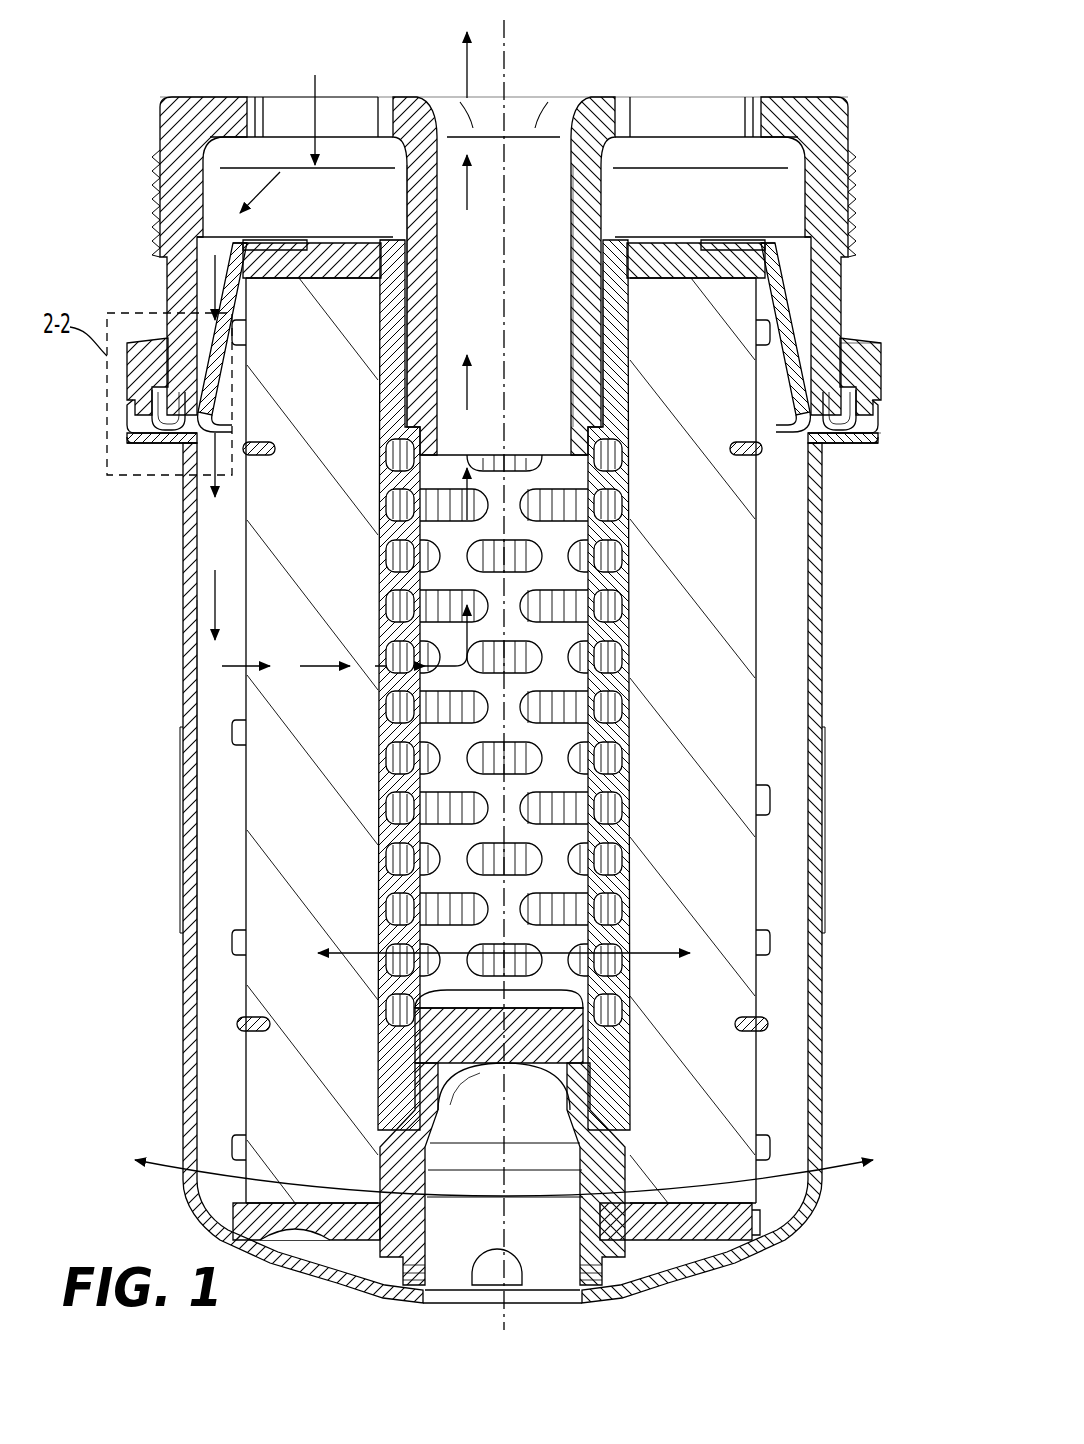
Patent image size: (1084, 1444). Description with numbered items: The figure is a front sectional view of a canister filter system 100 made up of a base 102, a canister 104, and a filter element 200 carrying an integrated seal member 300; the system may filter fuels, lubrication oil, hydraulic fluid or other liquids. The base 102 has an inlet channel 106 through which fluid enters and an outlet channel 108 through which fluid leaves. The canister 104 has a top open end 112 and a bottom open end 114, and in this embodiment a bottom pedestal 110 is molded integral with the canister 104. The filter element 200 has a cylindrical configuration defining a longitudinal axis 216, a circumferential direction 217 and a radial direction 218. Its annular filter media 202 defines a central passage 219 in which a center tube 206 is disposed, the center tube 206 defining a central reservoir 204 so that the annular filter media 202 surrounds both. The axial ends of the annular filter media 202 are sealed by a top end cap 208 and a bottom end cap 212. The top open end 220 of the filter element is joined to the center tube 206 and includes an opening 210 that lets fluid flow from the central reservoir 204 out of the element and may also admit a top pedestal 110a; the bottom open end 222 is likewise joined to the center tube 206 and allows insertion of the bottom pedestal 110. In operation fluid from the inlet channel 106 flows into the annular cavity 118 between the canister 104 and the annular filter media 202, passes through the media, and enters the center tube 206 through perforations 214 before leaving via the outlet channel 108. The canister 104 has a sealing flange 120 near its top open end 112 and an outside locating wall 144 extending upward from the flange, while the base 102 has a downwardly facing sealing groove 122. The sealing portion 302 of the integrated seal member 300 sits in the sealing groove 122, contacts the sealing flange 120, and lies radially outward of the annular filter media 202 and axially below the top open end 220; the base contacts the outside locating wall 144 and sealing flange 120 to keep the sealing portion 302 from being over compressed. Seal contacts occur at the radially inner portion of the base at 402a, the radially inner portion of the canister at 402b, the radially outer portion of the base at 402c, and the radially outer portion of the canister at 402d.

The canister filter system 100 is at (636, 53).
The base 102 is at (812, 86).
The canister 104 is at (822, 668).
The inlet channel 106 is at (352, 104).
The outlet channel 108 is at (527, 108).
The bottom pedestal 110 is at (586, 1058).
The top pedestal 110a is at (582, 402).
The top open end 112 is at (236, 430).
The bottom open end 114 is at (552, 1264).
The annular cavity 118 is at (198, 782).
The sealing flange 120 is at (160, 432).
The sealing groove 122 is at (190, 383).
The outside locating wall 144 is at (128, 421).
The filter element 200 is at (515, 741).
The annular filter media 202 is at (320, 746).
The central reservoir 204 is at (560, 748).
The center tube 206 is at (625, 628).
The top end cap 208 is at (738, 266).
The opening 210 is at (408, 291).
The bottom end cap 212 is at (720, 1250).
The perforations 214 is at (620, 545).
The longitudinal axis 216 is at (500, 1098).
The circumferential direction 217 is at (862, 1160).
The radial direction 218 is at (628, 975).
The central passage 219 is at (626, 478).
The top open end 220 is at (597, 254).
The bottom open end 222 is at (410, 1222).
The integrated seal member 300 is at (505, 409).
The sealing portion 302 is at (173, 440).
The seal contact at radially inner portion of the base 402a is at (605, 238).
The seal contact at radially inner portion of the canister 402b is at (717, 1238).
The seal contact at radially outer portion of the base 402c is at (846, 390).
The seal contact at radially outer portion of the canister 402d is at (842, 436).